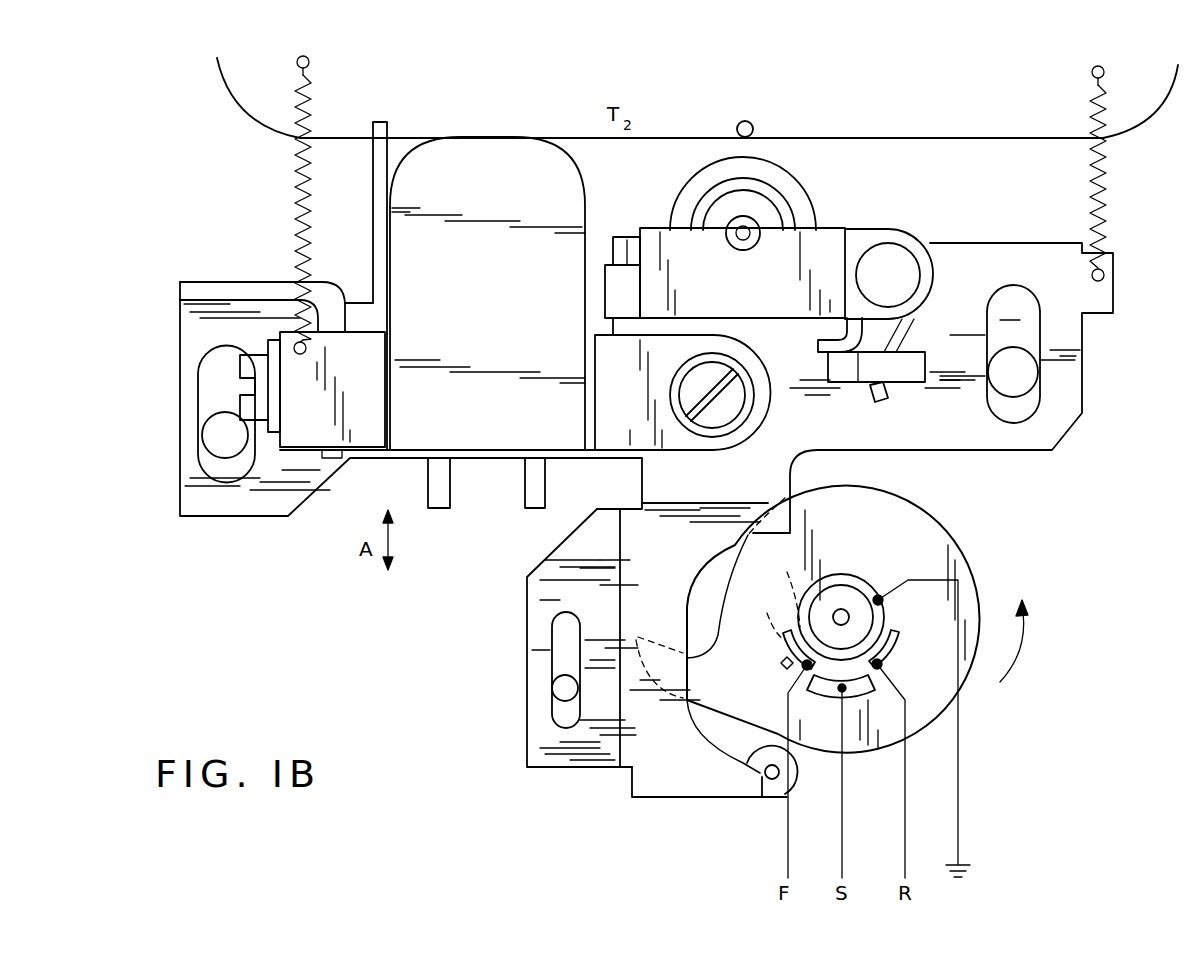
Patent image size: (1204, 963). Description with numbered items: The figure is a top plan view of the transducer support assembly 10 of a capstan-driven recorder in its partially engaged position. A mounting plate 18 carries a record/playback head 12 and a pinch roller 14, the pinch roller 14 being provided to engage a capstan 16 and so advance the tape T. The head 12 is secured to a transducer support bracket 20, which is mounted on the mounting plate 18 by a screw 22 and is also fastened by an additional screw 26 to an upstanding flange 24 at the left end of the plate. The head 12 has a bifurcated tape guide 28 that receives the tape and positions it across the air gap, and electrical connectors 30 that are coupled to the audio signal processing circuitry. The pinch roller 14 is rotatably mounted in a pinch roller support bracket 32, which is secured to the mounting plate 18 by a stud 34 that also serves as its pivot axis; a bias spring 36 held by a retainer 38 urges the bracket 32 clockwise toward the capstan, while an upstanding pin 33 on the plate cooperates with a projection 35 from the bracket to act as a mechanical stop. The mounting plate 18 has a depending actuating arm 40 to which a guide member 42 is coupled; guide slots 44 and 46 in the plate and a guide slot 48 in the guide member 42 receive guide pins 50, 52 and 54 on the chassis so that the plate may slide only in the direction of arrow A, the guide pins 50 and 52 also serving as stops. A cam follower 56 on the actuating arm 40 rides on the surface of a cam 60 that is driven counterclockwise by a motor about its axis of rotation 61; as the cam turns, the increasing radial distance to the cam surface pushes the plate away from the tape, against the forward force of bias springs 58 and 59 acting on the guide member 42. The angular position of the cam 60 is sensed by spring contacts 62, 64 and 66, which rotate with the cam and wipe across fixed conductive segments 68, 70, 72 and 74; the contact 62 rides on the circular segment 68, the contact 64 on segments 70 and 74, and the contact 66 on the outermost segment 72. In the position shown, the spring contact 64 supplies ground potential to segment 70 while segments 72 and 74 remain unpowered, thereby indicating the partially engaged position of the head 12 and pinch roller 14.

The transducer support assembly 10 is at (1121, 241).
The head 12 is at (578, 186).
The pinch roller 14 is at (810, 188).
The capstan 16 is at (755, 125).
The mounting plate 18 is at (975, 448).
The transducer support bracket 20 is at (705, 452).
The screw 22 is at (688, 388).
The upstanding flange 24 is at (252, 296).
The additional screw 26 is at (258, 362).
The tape guide 28 is at (373, 163).
The electrical connectors 30 is at (530, 500).
The pinch roller support bracket 32 is at (826, 242).
The upstanding pin 33 is at (605, 246).
The stud 34 is at (888, 258).
The projection 35 is at (605, 285).
The bias spring 36 is at (893, 400).
The retainer 38 is at (847, 368).
The actuating arm 40 is at (672, 798).
The guide member 42 is at (527, 593).
The guide slot 44 is at (1032, 322).
The guide slot 46 is at (242, 380).
The guide slot 48 is at (552, 628).
The guide pin 50 is at (1025, 372).
The guide pin 52 is at (215, 418).
The guide pin 54 is at (560, 690).
The cam follower 56 is at (770, 795).
The bias spring 58 is at (292, 192).
The bias spring 59 is at (1095, 170).
The cam 60 is at (935, 530).
The axis of rotation 61 is at (840, 609).
The spring contact 62 is at (787, 572).
The spring contact 64 is at (783, 632).
The spring contact 66 is at (785, 657).
The conductive segment 68 is at (880, 594).
The conductive segment 70 is at (785, 668).
The conductive segment 72 is at (838, 690).
The conductive segment 74 is at (900, 652).